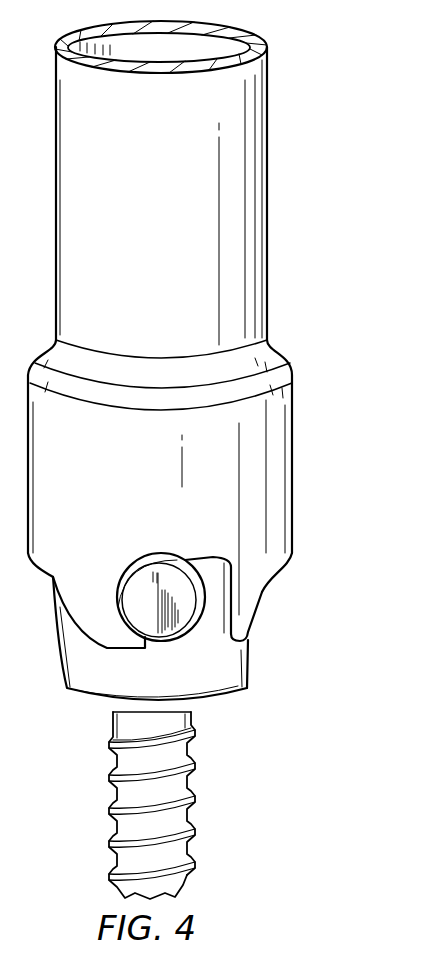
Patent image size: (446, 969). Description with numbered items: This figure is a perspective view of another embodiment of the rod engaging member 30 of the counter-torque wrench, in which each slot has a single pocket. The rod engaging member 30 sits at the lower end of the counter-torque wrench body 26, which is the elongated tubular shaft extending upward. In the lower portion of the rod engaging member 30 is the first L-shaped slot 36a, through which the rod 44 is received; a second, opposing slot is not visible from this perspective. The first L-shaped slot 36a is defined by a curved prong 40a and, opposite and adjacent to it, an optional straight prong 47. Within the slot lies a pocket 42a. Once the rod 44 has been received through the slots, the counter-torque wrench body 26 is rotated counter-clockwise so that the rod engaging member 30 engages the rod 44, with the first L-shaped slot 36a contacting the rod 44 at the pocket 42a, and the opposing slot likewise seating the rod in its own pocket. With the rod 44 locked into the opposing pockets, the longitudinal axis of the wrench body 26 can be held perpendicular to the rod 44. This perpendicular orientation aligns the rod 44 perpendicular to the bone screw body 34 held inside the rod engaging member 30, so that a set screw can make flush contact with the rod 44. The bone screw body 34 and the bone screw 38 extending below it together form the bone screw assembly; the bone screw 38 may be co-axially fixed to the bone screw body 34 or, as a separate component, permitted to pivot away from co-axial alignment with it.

The counter-torque wrench body 26 is at (268, 184).
The rod engaging member 30 is at (295, 447).
The bone screw body 34 is at (53, 643).
The first L-shaped slot 36a is at (202, 655).
The bone screw 38 is at (173, 812).
The curved prong 40a is at (118, 636).
The pocket 42a is at (138, 590).
The rod 44 is at (174, 588).
The straight prong 47 is at (247, 628).